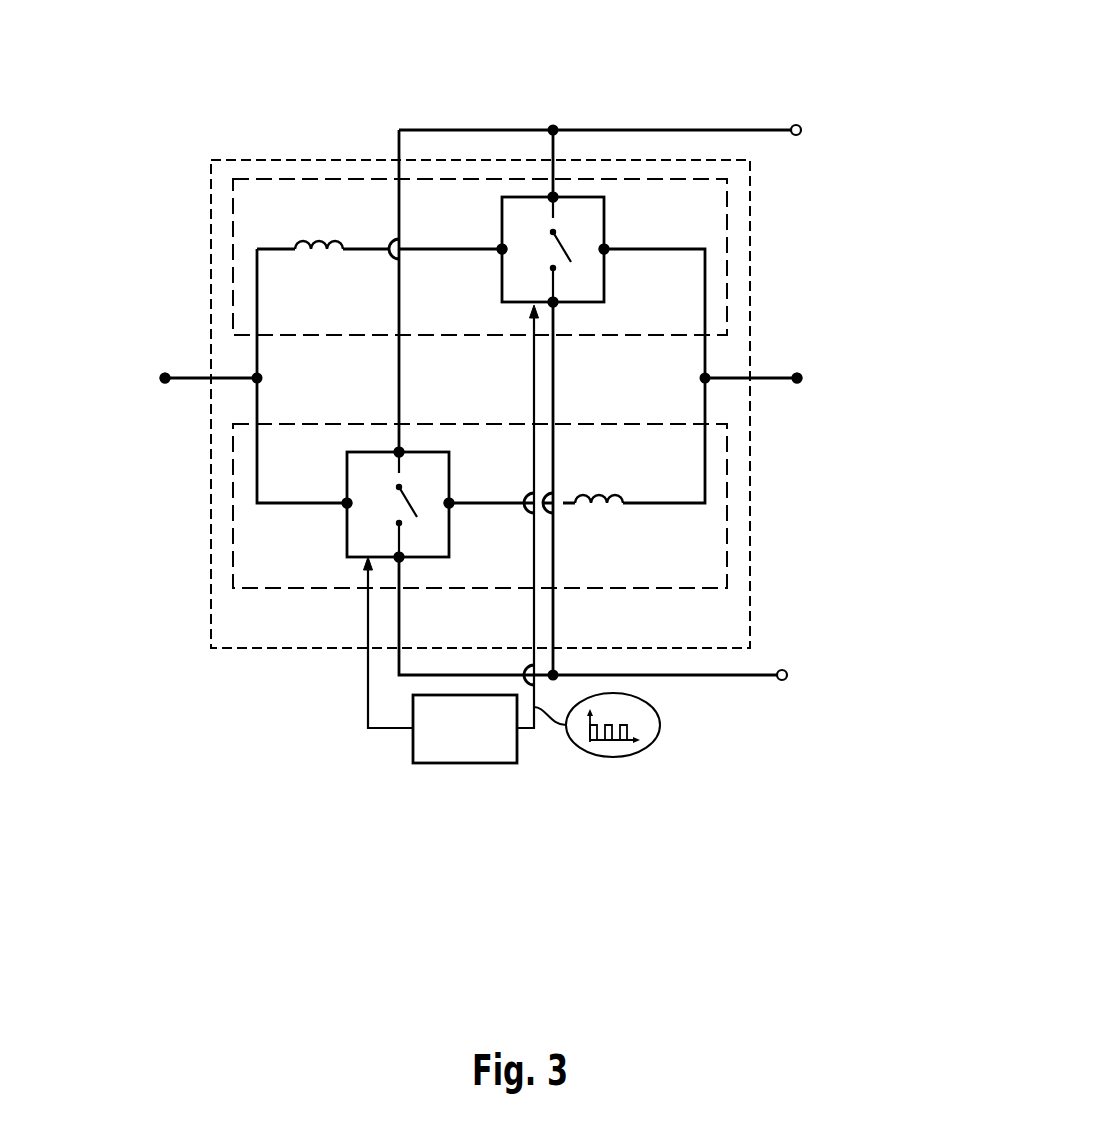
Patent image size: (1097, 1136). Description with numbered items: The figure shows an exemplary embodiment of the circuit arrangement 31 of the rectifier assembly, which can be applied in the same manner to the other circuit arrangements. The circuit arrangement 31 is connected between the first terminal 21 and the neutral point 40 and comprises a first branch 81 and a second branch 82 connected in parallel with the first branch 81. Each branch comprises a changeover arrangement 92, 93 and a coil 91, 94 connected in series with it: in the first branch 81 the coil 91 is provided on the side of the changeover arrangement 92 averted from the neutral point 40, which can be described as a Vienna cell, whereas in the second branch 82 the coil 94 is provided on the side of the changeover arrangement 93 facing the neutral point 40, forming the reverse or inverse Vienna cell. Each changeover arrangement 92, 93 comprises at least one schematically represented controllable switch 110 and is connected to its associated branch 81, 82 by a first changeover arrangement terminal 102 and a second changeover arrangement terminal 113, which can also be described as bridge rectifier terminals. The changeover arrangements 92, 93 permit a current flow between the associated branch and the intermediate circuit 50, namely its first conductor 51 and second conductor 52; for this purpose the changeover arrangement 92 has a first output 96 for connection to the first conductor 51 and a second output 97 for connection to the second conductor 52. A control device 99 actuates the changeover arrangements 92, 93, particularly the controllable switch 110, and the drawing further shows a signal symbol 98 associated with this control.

The first terminal 21 is at (165, 372).
The circuit arrangement 31 is at (252, 160).
The neutral point 40 is at (799, 372).
The intermediate circuit 50 is at (806, 75).
The first conductor 51 is at (801, 128).
The second conductor 52 is at (786, 679).
The first branch 81 is at (328, 178).
The second branch 82 is at (315, 590).
The coil 91 is at (318, 246).
The changeover arrangement 92 is at (500, 247).
The changeover arrangement 93 is at (346, 481).
The coil 94 is at (600, 500).
The first output 96 is at (556, 194).
The second output 97 is at (556, 305).
The pulse signal 98 is at (645, 748).
The control device 99 is at (458, 765).
The first changeover arrangement terminal 102 is at (500, 252).
The controllable switch 110 is at (562, 236).
The second changeover arrangement terminal 113 is at (606, 252).